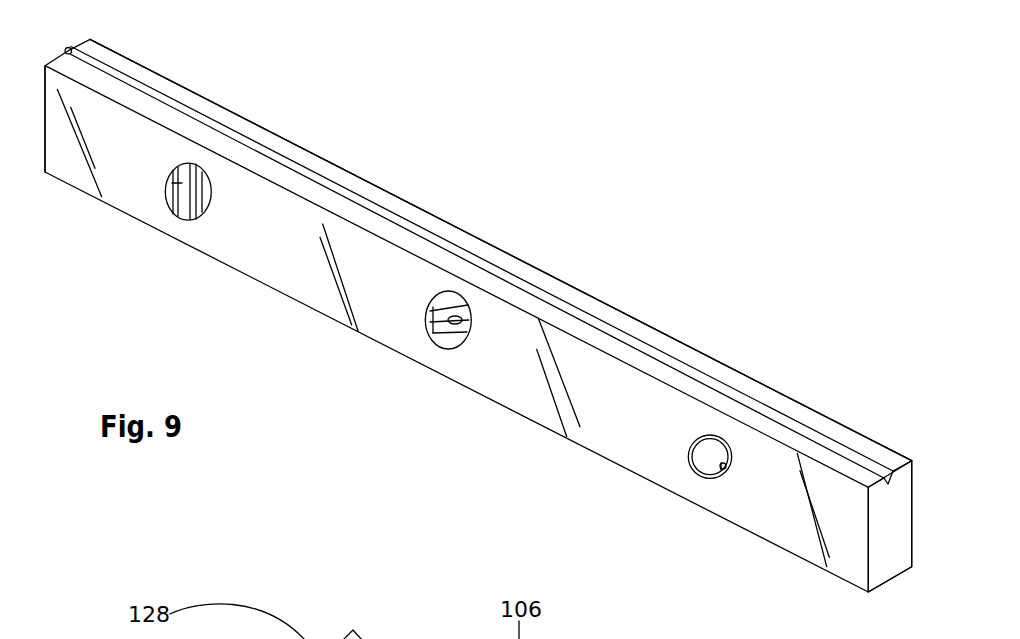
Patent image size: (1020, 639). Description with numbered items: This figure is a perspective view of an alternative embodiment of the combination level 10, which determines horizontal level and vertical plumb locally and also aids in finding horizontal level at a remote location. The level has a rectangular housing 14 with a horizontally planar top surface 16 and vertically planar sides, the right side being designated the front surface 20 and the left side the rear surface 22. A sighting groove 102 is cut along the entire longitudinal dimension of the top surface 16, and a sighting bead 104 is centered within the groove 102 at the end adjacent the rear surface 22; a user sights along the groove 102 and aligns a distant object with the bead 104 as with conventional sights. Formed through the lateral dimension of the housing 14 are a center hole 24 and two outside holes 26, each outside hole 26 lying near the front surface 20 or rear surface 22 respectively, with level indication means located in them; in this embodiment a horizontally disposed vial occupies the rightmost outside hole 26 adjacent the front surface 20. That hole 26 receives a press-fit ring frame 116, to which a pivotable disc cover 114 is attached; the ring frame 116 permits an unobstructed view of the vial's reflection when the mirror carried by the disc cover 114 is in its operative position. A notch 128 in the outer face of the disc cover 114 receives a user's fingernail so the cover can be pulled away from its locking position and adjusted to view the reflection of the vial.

The combination level 10 is at (450, 177).
The housing 14 is at (310, 283).
The top surface 16 is at (635, 327).
The front surface 20 is at (885, 558).
The rear surface 22 is at (44, 116).
The center hole 24 is at (450, 332).
The outside hole 26 is at (172, 184).
The sighting groove 102 is at (312, 176).
The sighting bead 104 is at (71, 48).
The disc cover 114 is at (702, 456).
The ring frame 116 is at (712, 485).
The notch 128 is at (728, 465).